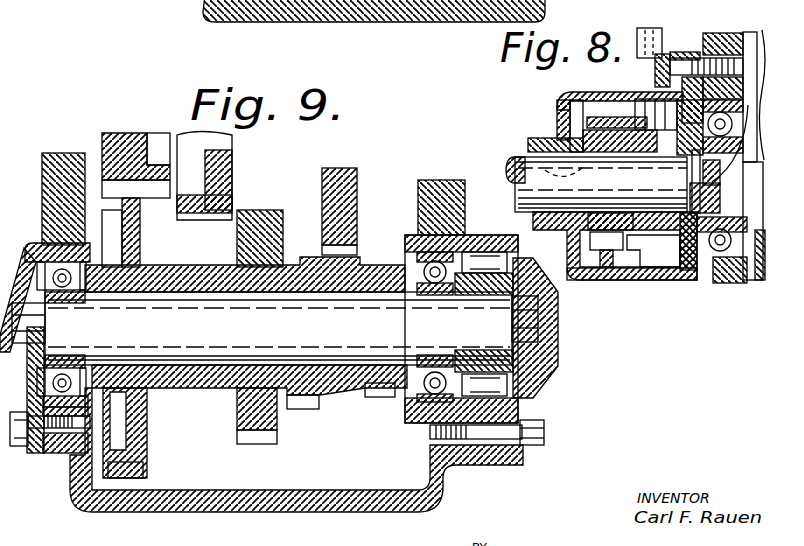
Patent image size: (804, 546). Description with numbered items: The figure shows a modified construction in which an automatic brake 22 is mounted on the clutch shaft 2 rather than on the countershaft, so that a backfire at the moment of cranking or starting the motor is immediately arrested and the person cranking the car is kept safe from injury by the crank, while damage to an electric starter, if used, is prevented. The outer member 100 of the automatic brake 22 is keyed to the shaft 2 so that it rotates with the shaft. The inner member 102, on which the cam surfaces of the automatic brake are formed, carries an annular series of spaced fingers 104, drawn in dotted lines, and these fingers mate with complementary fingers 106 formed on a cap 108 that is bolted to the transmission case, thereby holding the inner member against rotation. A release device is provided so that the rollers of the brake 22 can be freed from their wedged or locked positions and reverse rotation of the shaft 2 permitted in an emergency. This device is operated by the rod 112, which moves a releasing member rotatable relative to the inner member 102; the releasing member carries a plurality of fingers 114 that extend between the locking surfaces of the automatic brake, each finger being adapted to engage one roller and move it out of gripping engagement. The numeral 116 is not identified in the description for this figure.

The rod 112 is at (680, 20).
The cover flange 116 is at (615, 94).
The fingers 114 is at (568, 116).
The cap 108 is at (667, 89).
The complementary fingers 106 is at (669, 150).
The inner member 102 is at (572, 162).
The outer member 100 is at (597, 262).
The automatic brake 22 is at (611, 241).
The clutch shaft 2 is at (633, 182).
The spaced fingers 104 is at (662, 283).